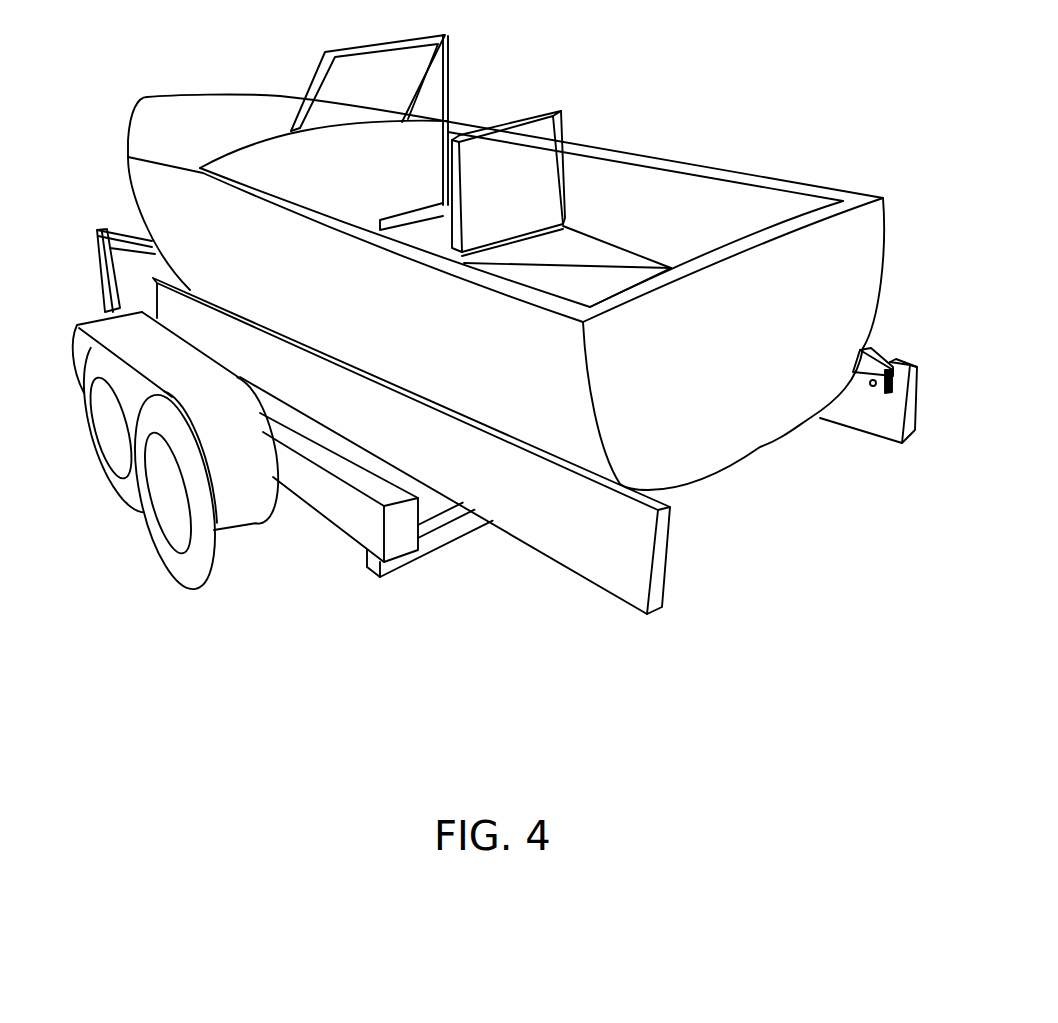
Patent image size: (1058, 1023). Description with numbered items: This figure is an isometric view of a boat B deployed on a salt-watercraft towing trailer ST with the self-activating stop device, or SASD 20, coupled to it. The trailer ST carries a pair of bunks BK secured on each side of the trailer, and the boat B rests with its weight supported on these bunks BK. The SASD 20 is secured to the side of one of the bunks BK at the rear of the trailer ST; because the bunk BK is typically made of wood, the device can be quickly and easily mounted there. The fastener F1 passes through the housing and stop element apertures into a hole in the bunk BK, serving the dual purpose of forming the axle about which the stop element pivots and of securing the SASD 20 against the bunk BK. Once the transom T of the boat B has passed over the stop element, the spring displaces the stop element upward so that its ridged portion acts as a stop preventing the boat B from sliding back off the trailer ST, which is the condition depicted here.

The boat B is at (531, 253).
The transom T is at (850, 273).
The salt/sea watercraft towing trailer ST is at (501, 428).
The bunk BK is at (907, 418).
The fastener F1 is at (872, 386).
The self-activating stop device (SASD) 20 is at (882, 452).